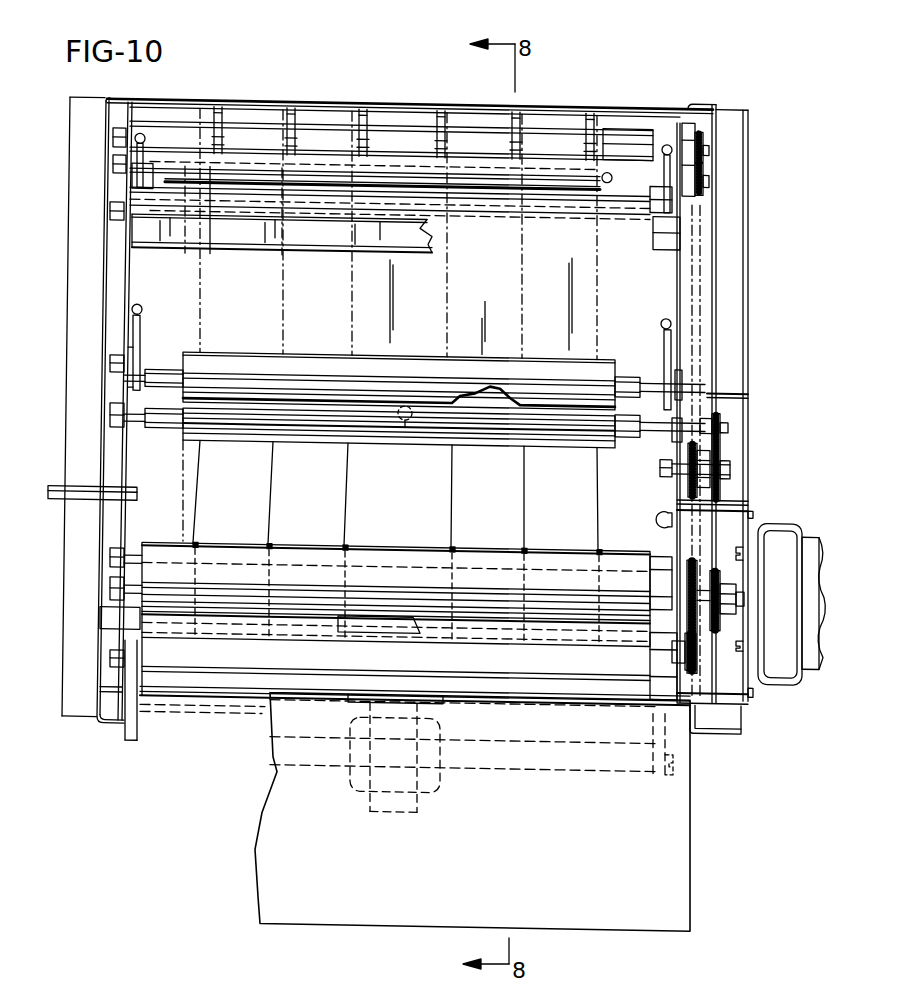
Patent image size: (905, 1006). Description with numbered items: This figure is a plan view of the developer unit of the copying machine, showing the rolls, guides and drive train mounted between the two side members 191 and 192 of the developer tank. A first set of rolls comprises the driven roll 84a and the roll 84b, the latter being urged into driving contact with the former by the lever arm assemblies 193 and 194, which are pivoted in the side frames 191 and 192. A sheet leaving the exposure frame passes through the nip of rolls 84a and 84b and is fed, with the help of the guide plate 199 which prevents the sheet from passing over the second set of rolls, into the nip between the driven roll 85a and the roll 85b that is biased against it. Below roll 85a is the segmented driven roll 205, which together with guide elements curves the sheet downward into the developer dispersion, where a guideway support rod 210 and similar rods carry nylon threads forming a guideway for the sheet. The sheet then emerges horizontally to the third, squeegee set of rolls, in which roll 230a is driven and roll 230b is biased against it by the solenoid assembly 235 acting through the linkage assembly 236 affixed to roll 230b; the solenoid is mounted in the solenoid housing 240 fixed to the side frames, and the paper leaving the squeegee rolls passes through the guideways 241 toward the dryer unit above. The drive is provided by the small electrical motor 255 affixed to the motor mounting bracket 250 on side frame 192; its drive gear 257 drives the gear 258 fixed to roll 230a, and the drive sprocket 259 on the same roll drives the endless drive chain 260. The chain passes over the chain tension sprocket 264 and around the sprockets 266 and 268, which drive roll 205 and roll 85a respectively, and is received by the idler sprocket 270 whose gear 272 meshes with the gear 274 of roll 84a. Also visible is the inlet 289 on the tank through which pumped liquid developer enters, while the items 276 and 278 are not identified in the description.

The driven roll 205 is at (333, 131).
The guideway support rod 210 is at (400, 118).
The driven roll of second set 85a is at (476, 194).
The biased roll of second set 85b is at (548, 202).
The guide plate 199 is at (327, 241).
The side member 191 is at (128, 260).
The side member 192 is at (680, 278).
The lever arm assembly 193 is at (118, 342).
The lever arm assembly 194 is at (678, 339).
The endless drive chain 260 is at (700, 277).
The sprocket 266 is at (703, 128).
The sprocket 268 is at (703, 165).
The driven roll of first set 84a is at (370, 437).
The roll of first set 84b is at (333, 359).
The pin 276 is at (410, 425).
The gear 274 is at (717, 409).
The gear 272 is at (703, 445).
The idler sprocket 270 is at (675, 445).
The retaining clip 278 is at (653, 513).
The drive sprocket 259 is at (688, 563).
The gear 258 is at (722, 572).
The drive gear 257 is at (716, 589).
The chain tension sprocket 264 is at (687, 645).
The electrical motor 255 is at (780, 673).
The motor mounting bracket 250 is at (742, 694).
The driven roll of third set 230a is at (412, 595).
The biased roll of third set 230b is at (237, 668).
The guideway 241 is at (365, 626).
The solenoid housing 240 is at (683, 828).
The solenoid assembly 235 is at (426, 791).
The linkage assembly 236 is at (514, 774).
The inlet 289 is at (60, 493).